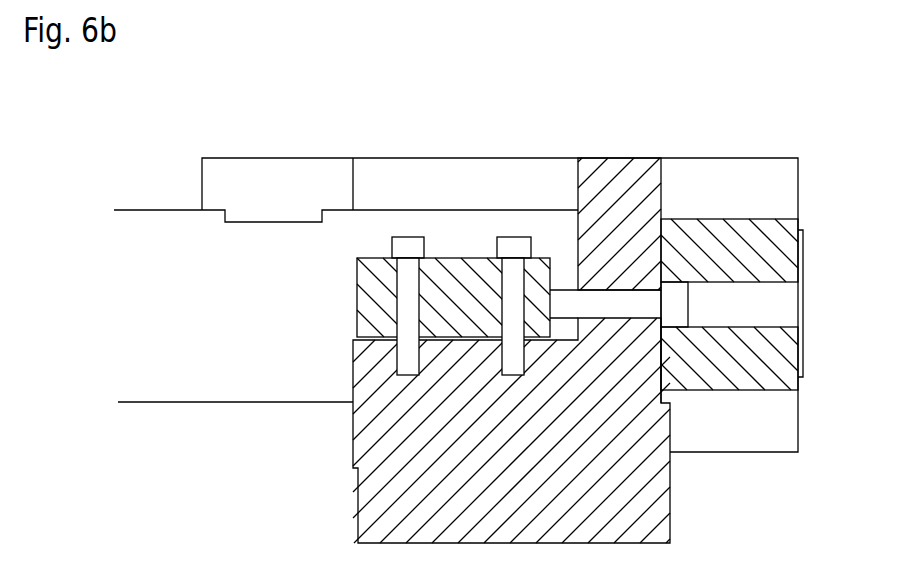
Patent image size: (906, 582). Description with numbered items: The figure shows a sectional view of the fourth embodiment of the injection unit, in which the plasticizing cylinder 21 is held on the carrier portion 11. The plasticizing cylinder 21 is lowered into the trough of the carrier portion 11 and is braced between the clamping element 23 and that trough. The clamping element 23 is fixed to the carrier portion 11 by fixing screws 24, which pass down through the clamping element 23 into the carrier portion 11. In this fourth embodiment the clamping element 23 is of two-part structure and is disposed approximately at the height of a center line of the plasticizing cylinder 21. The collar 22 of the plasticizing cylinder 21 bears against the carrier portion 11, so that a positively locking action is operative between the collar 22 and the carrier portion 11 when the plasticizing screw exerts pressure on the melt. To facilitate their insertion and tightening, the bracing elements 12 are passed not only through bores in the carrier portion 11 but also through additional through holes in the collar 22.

The carrier portion 11 is at (355, 440).
The bracing elements 12 is at (679, 307).
The plasticizing cylinder 21 is at (161, 225).
The collar 22 is at (715, 175).
The clamping element 23 is at (460, 272).
The fixing screws 24 is at (410, 240).